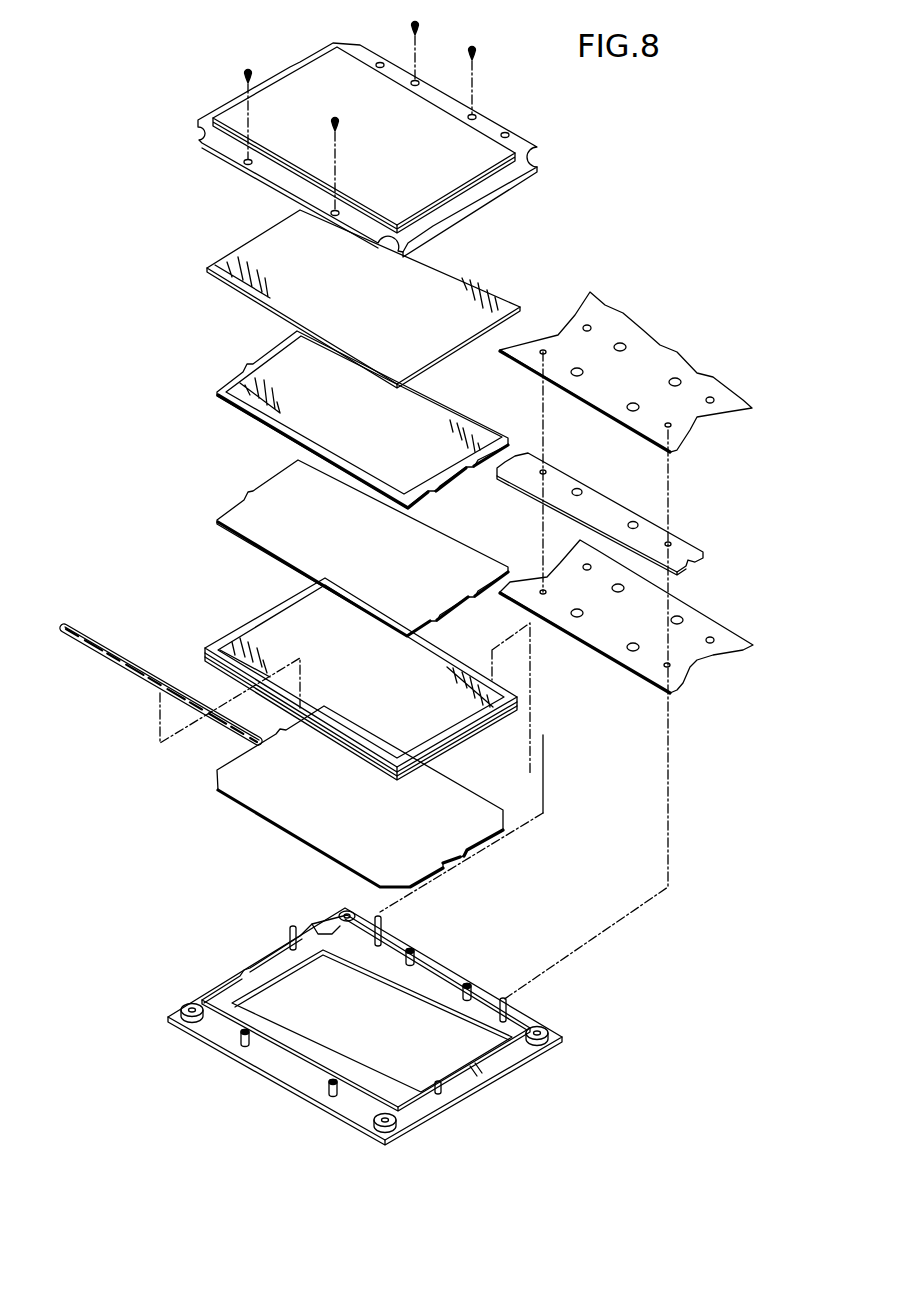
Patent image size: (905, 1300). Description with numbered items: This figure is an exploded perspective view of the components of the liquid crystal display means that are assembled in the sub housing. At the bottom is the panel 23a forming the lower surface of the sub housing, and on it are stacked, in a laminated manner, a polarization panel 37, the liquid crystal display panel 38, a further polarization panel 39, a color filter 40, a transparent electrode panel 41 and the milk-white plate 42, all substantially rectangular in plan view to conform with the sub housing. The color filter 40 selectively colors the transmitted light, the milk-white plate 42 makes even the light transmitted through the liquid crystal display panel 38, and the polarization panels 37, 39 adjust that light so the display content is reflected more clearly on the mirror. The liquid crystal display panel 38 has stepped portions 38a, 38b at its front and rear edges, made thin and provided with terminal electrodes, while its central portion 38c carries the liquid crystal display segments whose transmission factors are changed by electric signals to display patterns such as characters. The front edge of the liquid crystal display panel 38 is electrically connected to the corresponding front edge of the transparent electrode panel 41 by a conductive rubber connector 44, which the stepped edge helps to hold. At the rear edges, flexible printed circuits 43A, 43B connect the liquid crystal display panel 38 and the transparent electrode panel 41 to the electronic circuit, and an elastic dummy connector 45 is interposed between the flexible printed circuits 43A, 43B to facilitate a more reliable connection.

The panel 23a is at (513, 1060).
The polarization panel 37 is at (217, 770).
The liquid crystal display panel 38 is at (215, 641).
The stepped portion 38a is at (380, 756).
The stepped portion 38b is at (513, 700).
The central portion 38c is at (443, 720).
The polarization panel 39 is at (217, 520).
The color filter 40 is at (217, 392).
The transparent electrode panel 41 is at (208, 268).
The milk-white plate 42 is at (278, 137).
The flexible printed circuit 43A is at (613, 650).
The flexible printed circuit 43B is at (727, 404).
The conductive rubber connector 44 is at (117, 665).
The elastic dummy connector 45 is at (613, 508).